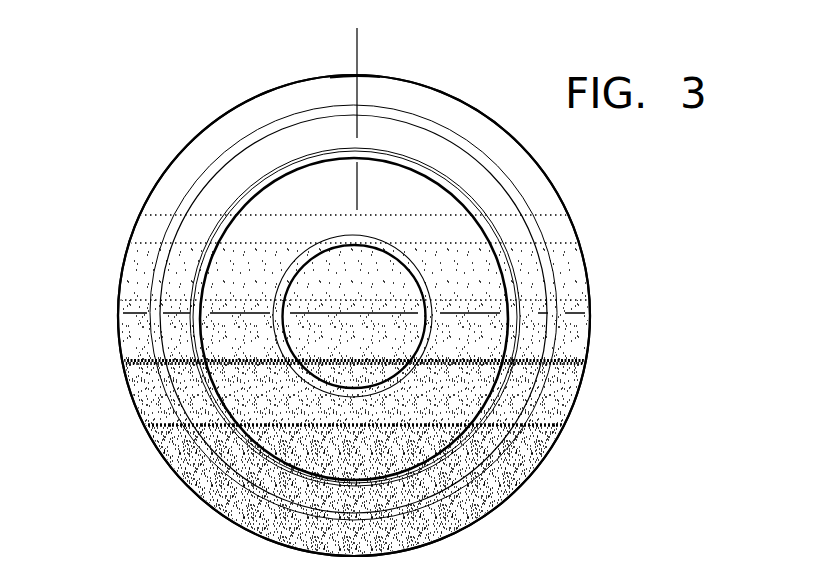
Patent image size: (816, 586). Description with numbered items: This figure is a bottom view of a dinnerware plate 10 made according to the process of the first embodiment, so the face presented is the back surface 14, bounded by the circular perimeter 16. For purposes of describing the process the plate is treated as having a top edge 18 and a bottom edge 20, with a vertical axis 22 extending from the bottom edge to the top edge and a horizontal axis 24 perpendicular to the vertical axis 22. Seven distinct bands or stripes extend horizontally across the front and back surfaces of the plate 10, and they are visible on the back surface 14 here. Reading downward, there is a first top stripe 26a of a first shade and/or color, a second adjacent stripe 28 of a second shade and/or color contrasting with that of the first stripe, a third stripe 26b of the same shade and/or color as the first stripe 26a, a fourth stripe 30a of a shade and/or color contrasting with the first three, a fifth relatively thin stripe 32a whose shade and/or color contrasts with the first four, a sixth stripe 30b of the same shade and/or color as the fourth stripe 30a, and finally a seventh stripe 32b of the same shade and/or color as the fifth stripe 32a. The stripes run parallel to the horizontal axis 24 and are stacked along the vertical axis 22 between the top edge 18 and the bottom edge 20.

The dinnerware plate 10 is at (584, 218).
The back surface 14 is at (362, 288).
The circular perimeter 16 is at (513, 133).
The top edge 18 is at (362, 73).
The bottom edge 20 is at (365, 556).
The vertical axis 22 is at (357, 42).
The horizontal axis 24 is at (597, 322).
The first top stripe 26a is at (543, 196).
The third stripe 26b is at (584, 282).
The second stripe 28 is at (563, 240).
The fourth stripe 30a is at (560, 353).
The sixth stripe 30b is at (558, 402).
The fifth stripe 32a is at (580, 372).
The seventh stripe 32b is at (557, 440).